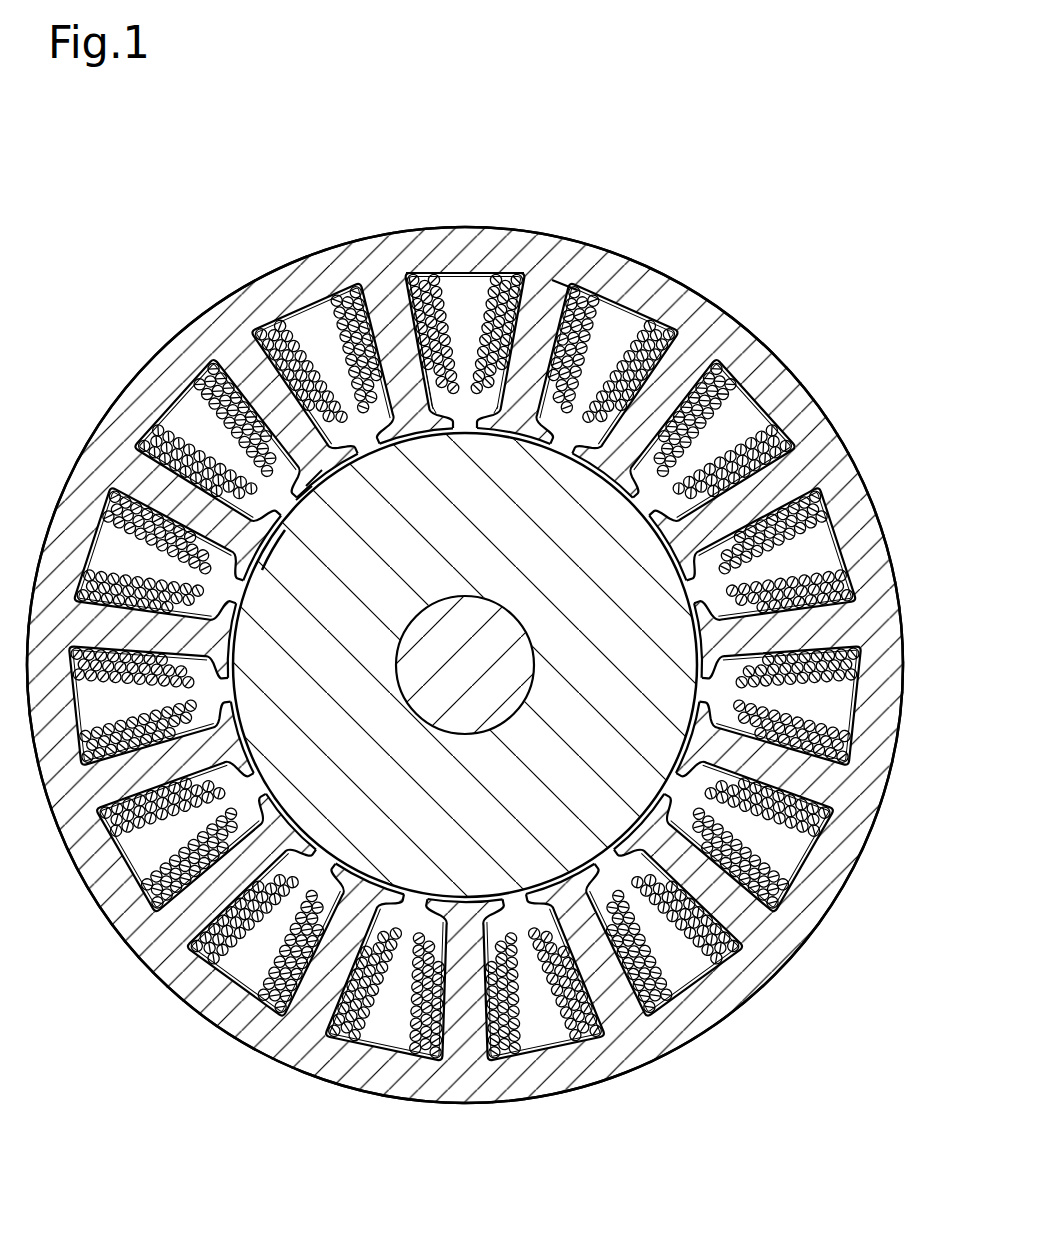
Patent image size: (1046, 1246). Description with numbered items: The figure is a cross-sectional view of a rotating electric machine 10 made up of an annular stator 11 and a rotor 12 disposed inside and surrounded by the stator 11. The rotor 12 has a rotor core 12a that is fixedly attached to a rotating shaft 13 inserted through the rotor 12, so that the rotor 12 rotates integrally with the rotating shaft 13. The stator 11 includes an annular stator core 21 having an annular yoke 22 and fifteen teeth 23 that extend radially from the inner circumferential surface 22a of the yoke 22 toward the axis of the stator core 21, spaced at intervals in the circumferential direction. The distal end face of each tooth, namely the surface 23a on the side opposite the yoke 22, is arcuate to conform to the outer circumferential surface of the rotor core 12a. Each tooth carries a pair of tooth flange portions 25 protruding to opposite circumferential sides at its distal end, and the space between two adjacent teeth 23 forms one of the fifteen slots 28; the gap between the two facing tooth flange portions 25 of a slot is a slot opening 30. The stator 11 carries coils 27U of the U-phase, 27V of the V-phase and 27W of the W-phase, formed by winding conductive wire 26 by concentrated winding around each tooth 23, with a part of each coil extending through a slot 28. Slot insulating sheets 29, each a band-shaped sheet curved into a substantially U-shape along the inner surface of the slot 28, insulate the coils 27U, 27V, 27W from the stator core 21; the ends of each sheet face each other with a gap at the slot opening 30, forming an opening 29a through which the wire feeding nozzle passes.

The rotating electric machine 10 is at (740, 167).
The stator 11 is at (200, 322).
The rotor 12 is at (470, 900).
The rotor core 12a is at (622, 1062).
The rotating shaft 13 is at (430, 712).
The stator core 21 is at (152, 393).
The yoke 22 is at (447, 262).
The inner circumferential surface 22a is at (598, 290).
The teeth 23 is at (327, 478).
The surface 23a is at (318, 485).
The tooth flange portions 25 is at (262, 570).
The conductive wire 26 is at (465, 303).
The U-phase coil 27U is at (540, 268).
The V-phase coil 27V is at (668, 300).
The W-phase coil 27W is at (442, 268).
The slots 28 is at (492, 270).
The slot insulating sheets 29 is at (505, 268).
The opening 29a is at (480, 432).
The slot opening 30 is at (460, 432).